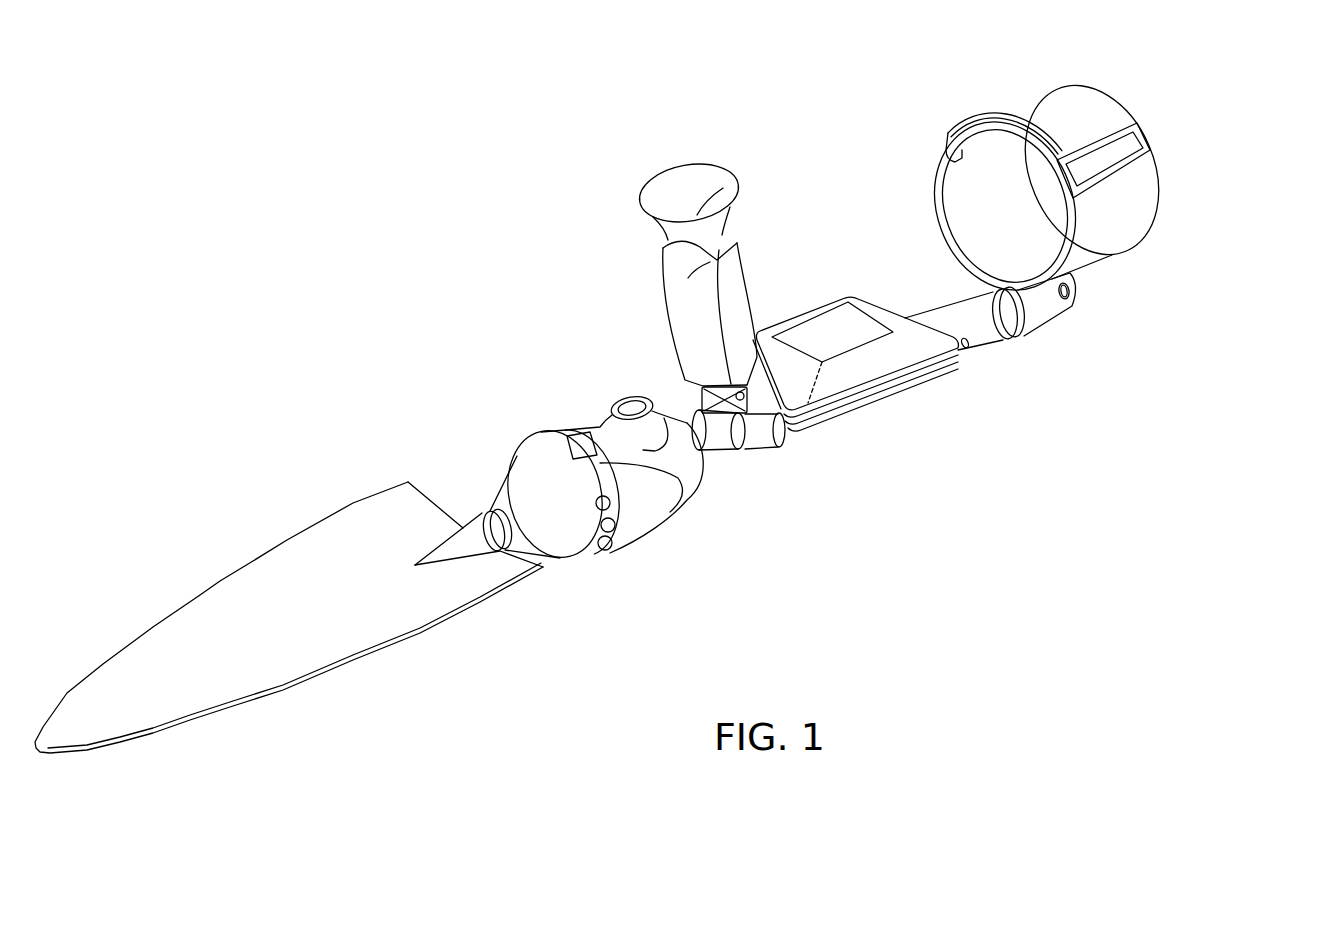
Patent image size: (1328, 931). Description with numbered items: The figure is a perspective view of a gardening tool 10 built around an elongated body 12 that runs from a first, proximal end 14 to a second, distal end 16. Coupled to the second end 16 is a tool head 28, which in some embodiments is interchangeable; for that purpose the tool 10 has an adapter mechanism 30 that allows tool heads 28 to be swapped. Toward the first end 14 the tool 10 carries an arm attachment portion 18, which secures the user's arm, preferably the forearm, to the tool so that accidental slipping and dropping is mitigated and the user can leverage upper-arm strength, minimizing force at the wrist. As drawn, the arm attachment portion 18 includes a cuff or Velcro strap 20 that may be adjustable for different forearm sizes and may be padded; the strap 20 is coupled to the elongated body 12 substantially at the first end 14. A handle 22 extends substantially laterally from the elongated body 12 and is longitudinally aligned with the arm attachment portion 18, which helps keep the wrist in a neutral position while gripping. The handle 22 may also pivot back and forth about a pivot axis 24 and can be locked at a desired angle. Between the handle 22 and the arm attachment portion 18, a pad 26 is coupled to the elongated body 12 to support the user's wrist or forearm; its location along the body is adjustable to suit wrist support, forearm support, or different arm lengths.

The gardening tool 10 is at (600, 247).
The elongated body 12 is at (988, 340).
The first end 14 is at (1075, 307).
The second end 16 is at (585, 570).
The arm attachment portion 18 is at (980, 193).
The strap 20 is at (1093, 128).
The handle 22 is at (723, 315).
The pivot axis 24 is at (740, 396).
The pad 26 is at (862, 362).
The tool head 28 is at (289, 568).
The adapter mechanism 30 is at (572, 427).